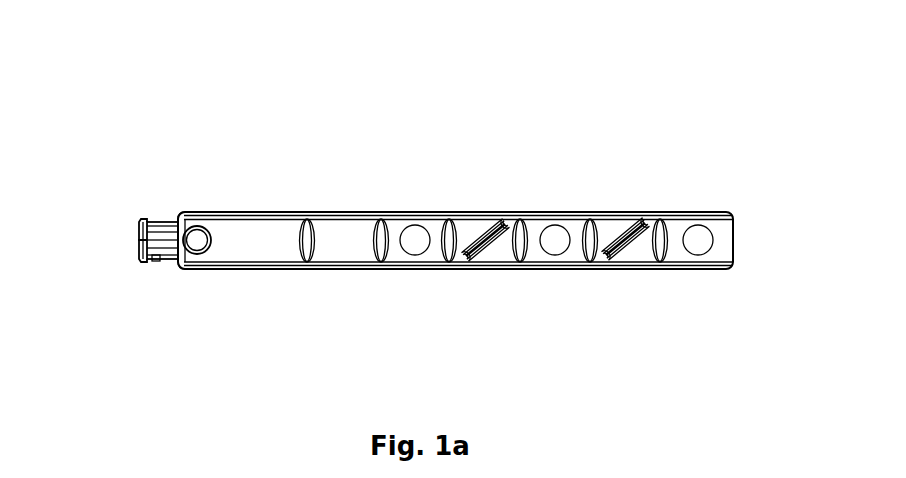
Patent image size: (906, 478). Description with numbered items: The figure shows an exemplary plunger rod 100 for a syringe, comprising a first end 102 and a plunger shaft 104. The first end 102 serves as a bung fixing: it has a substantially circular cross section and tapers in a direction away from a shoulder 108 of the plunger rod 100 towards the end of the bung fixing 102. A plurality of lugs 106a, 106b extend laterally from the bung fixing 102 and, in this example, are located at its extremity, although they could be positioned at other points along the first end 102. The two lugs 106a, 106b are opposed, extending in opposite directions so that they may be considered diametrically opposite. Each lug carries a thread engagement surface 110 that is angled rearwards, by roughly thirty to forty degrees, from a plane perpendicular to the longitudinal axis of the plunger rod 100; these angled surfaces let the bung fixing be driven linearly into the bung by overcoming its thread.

The plunger rod 100 is at (643, 122).
The first end 102 is at (163, 259).
The plunger shaft 104 is at (417, 212).
The lug 106a is at (140, 258).
The lug 106b is at (140, 222).
The shoulder 108 is at (201, 268).
The proximal end of body 110 is at (176, 219).